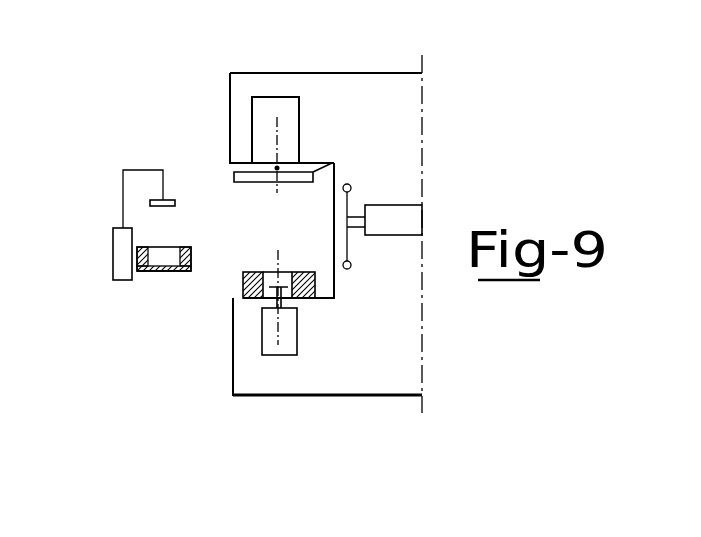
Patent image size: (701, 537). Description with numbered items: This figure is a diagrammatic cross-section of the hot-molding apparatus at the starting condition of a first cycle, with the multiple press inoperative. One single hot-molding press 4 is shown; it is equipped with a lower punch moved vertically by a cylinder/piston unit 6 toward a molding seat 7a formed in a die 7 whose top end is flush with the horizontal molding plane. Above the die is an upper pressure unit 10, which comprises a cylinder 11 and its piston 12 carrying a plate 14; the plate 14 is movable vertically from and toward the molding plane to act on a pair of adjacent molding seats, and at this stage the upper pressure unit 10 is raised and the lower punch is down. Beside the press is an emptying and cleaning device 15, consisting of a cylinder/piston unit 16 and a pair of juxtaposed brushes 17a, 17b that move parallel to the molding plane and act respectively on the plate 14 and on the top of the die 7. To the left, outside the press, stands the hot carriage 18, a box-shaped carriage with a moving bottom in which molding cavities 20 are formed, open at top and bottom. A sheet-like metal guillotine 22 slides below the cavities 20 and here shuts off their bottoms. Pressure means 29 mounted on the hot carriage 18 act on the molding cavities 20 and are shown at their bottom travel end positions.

The single hot-molding press 4 is at (293, 404).
The cylinder/piston unit 6 is at (268, 342).
The die 7 is at (243, 286).
The molding seat 7a is at (272, 272).
The upper pressure unit 10 is at (272, 86).
The cylinder 11 is at (299, 104).
The piston 12 is at (280, 168).
The plate 14 is at (325, 168).
The emptying and cleaning device 15 is at (411, 198).
The cylinder/piston unit 16 is at (384, 236).
The brush 17a is at (351, 187).
The brush 17b is at (347, 269).
The hot carriage 18 is at (172, 288).
The molding cavity 20 is at (160, 257).
The guillotine 22 is at (147, 272).
The pressure means 29 is at (108, 248).